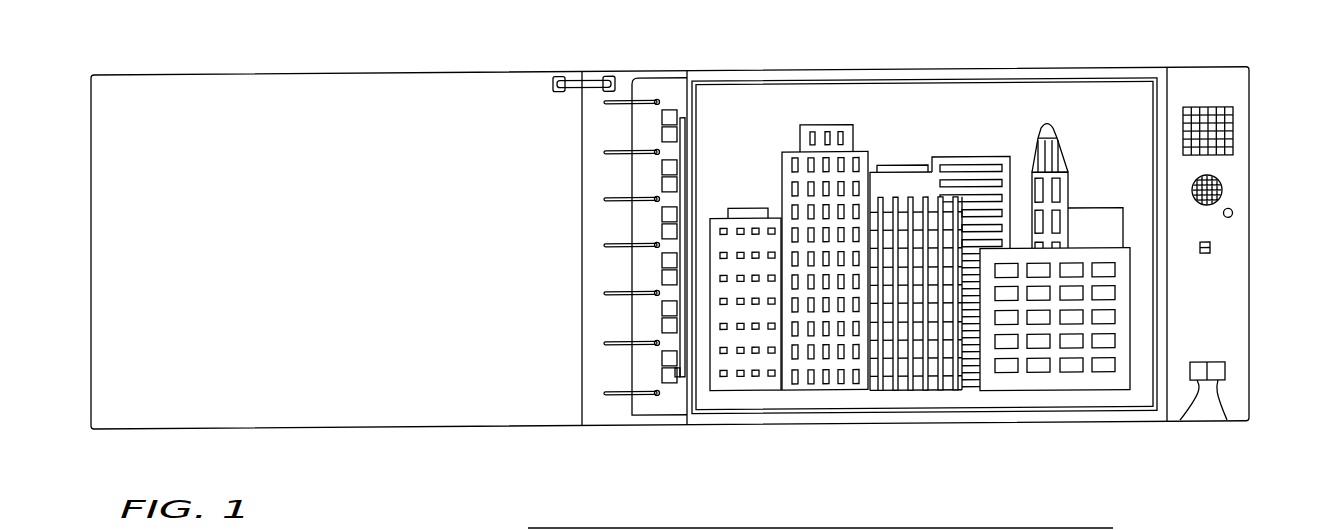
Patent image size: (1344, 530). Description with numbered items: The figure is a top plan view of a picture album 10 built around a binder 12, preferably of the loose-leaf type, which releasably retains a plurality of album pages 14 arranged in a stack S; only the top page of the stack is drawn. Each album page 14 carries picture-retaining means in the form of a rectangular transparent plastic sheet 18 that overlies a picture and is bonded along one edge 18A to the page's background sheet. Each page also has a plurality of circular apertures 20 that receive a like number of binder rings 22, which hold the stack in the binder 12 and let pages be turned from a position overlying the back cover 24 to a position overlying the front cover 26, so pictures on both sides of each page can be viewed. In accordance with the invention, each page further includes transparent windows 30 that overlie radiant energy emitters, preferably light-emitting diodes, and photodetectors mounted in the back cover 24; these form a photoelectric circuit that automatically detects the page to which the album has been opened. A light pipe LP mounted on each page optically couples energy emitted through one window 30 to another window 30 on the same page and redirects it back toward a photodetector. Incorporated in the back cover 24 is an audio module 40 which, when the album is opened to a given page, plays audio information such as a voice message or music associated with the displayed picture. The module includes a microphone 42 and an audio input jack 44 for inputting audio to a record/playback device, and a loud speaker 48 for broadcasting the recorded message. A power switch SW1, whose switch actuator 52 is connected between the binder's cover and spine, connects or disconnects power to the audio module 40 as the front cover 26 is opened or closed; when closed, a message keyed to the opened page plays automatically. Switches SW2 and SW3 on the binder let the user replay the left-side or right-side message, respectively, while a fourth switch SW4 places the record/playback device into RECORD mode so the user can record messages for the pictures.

In FIG. 1, the picture album 10 is at (752, 57).
In FIG. 1, the binder 12 is at (460, 75).
In FIG. 1, the album pages 14 is at (1024, 128).
In FIG. 2, the album pages 14 is at (817, 524).
In FIG. 2, the plastic sheet 18 is at (1060, 528).
In FIG. 2, the edge of sheet 18A is at (605, 528).
In FIG. 2, the circular apertures 20 is at (558, 528).
In FIG. 1, the binder rings 22 is at (604, 106).
In FIG. 1, the back cover 24 is at (1167, 75).
In FIG. 1, the front cover 26 is at (361, 279).
In FIG. 1, the windows 30 is at (682, 109).
In FIG. 1, the audio module 40 is at (1224, 96).
In FIG. 1, the microphone 42 is at (1222, 193).
In FIG. 1, the audio input jack 44 is at (1231, 225).
In FIG. 1, the loud speaker 48 is at (1233, 141).
In FIG. 1, the switch actuator 52 is at (575, 80).
In FIG. 1, the stack of pages S is at (961, 75).
In FIG. 1, the light pipe LP is at (682, 160).
In FIG. 1, the power switch SW1 is at (600, 71).
In FIG. 1, the left page switch SW2 is at (1180, 429).
In FIG. 1, the right page switch SW3 is at (1227, 429).
In FIG. 1, the RECORD switch SW4 is at (1210, 254).